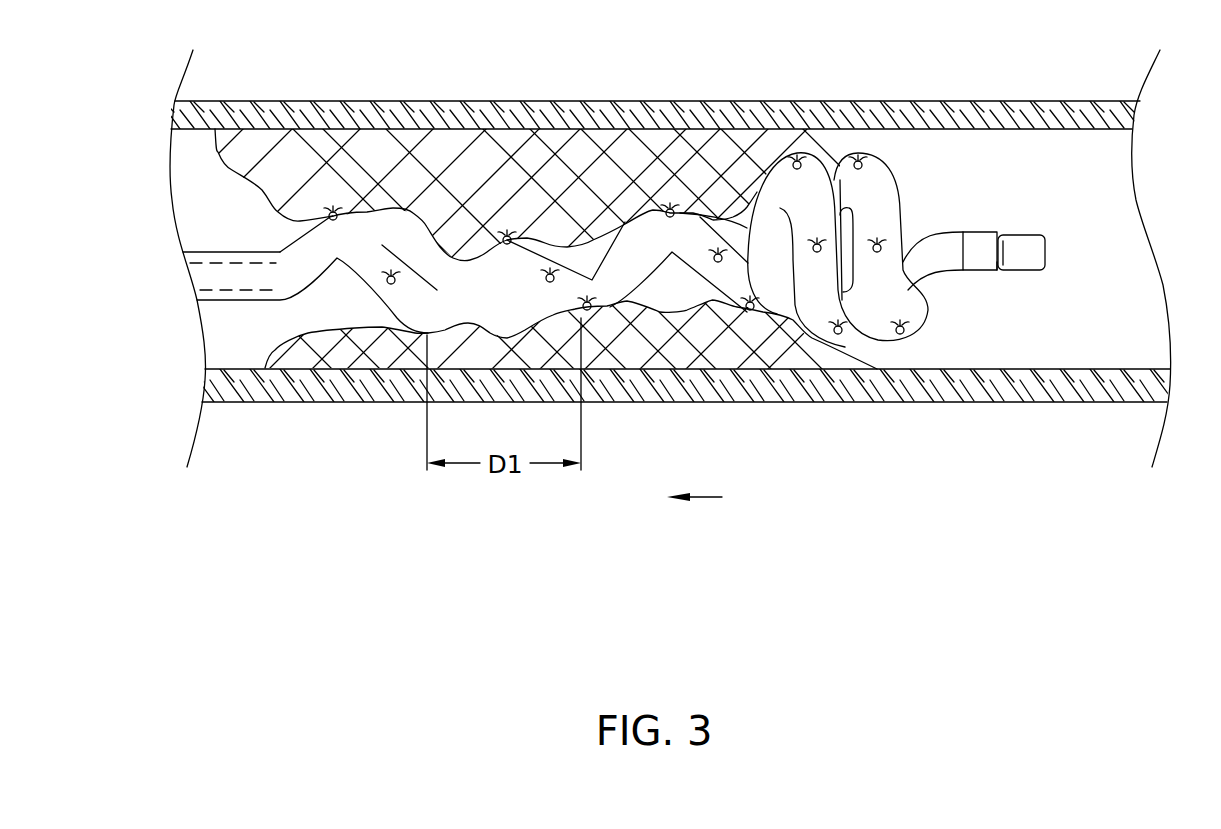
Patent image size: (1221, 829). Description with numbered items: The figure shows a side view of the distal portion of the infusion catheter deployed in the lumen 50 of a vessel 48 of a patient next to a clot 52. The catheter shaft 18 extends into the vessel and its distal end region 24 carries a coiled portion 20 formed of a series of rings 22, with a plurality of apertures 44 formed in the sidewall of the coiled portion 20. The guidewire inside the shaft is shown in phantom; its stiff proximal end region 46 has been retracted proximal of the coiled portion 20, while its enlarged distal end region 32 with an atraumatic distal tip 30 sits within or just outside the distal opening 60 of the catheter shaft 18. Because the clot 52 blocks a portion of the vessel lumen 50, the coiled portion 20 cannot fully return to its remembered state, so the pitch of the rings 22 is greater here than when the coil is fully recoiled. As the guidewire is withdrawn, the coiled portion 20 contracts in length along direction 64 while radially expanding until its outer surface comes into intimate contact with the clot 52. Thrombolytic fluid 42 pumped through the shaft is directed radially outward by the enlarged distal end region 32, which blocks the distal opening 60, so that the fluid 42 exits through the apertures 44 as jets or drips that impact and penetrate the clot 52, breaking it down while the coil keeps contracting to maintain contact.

The catheter shaft 18 is at (242, 251).
The coiled portion 20 is at (665, 290).
The rings 22 is at (370, 212).
The distal end region 24 is at (963, 270).
The distal tip 30 is at (1047, 238).
The enlarged distal end region 32 is at (1023, 232).
The fluid 42 is at (389, 278).
The apertures 44 is at (386, 289).
The proximal end region 46 is at (221, 300).
The vessel 48 is at (940, 112).
The lumen 50 is at (1047, 148).
The clot 52 is at (532, 157).
The distal opening 60 is at (1000, 273).
The direction 64 is at (703, 497).